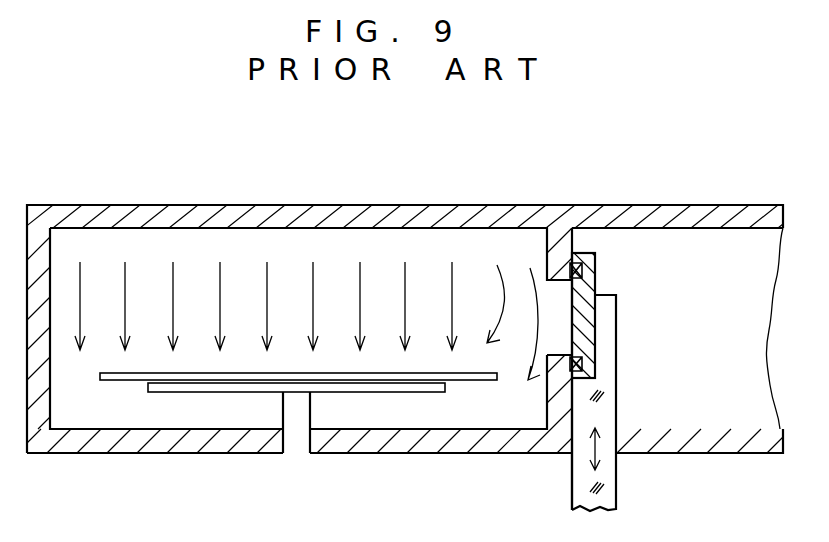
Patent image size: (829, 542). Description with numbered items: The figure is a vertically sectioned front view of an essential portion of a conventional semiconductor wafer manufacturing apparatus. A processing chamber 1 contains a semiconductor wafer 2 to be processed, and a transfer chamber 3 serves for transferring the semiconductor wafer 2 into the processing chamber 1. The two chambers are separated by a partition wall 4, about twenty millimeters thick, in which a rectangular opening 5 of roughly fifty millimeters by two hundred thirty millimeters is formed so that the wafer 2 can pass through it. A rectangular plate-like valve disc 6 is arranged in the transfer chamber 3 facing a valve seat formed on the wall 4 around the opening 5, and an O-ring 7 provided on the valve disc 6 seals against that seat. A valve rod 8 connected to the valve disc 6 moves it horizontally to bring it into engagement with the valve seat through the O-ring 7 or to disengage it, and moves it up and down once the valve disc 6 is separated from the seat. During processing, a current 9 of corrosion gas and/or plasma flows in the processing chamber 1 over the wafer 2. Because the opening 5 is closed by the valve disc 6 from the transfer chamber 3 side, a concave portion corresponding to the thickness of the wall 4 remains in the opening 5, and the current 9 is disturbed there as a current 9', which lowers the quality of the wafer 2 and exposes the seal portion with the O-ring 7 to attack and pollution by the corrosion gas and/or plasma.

The processing chamber 1 is at (375, 221).
The semiconductor wafer 2 is at (121, 383).
The transfer chamber 3 is at (750, 219).
The partition wall 4 is at (552, 250).
The rectangular opening 5 is at (548, 290).
The valve disc 6 is at (596, 295).
The O-ring 7 is at (577, 268).
The valve rod 8 is at (603, 491).
The current of corrosion gas and/or plasma 9 is at (266, 237).
The disturbed current 9' is at (505, 378).